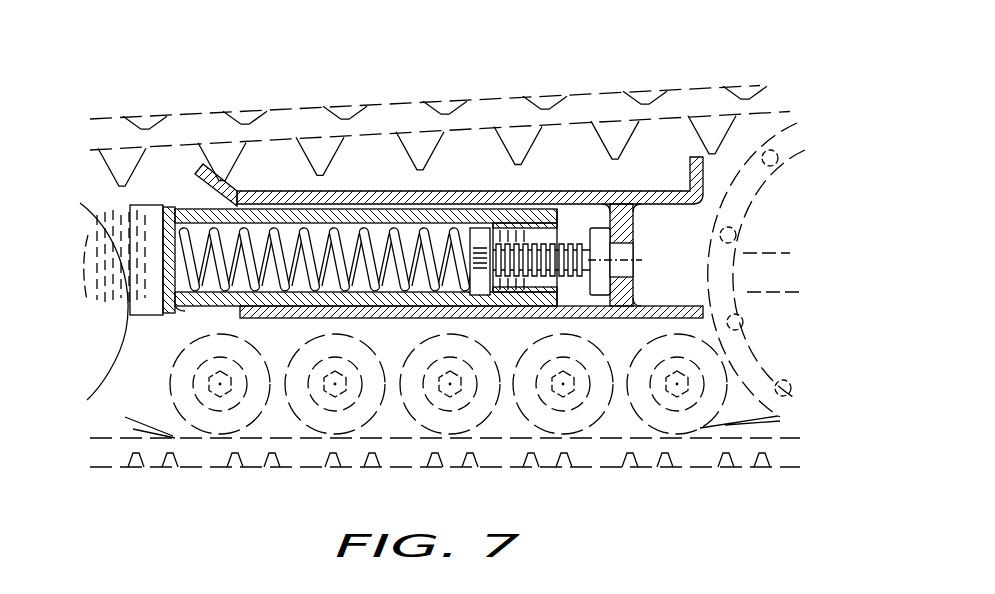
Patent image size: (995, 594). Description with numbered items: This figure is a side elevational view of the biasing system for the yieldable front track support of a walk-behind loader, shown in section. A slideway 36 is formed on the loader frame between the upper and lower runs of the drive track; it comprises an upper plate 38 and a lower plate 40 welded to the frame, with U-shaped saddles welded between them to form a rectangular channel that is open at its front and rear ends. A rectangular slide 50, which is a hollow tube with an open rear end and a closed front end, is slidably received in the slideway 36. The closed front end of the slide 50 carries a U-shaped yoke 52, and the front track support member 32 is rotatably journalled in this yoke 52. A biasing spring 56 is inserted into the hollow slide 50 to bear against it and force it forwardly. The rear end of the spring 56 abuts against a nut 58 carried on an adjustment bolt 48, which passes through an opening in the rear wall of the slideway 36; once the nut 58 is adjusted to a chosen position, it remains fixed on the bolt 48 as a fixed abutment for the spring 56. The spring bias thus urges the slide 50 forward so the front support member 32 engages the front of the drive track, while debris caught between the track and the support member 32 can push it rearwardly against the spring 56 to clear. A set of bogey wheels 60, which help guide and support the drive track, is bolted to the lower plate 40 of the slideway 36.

The front track support member 32 is at (112, 333).
The slideway 36 is at (645, 176).
The upper plate 38 is at (433, 191).
The lower plate 40 is at (693, 305).
The adjustment bolt 48 is at (563, 247).
The slide 50 is at (220, 217).
The U-shaped yoke 52 is at (148, 213).
The biasing spring 56 is at (335, 232).
The nut 58 is at (488, 247).
The bogey wheels 60 is at (588, 423).